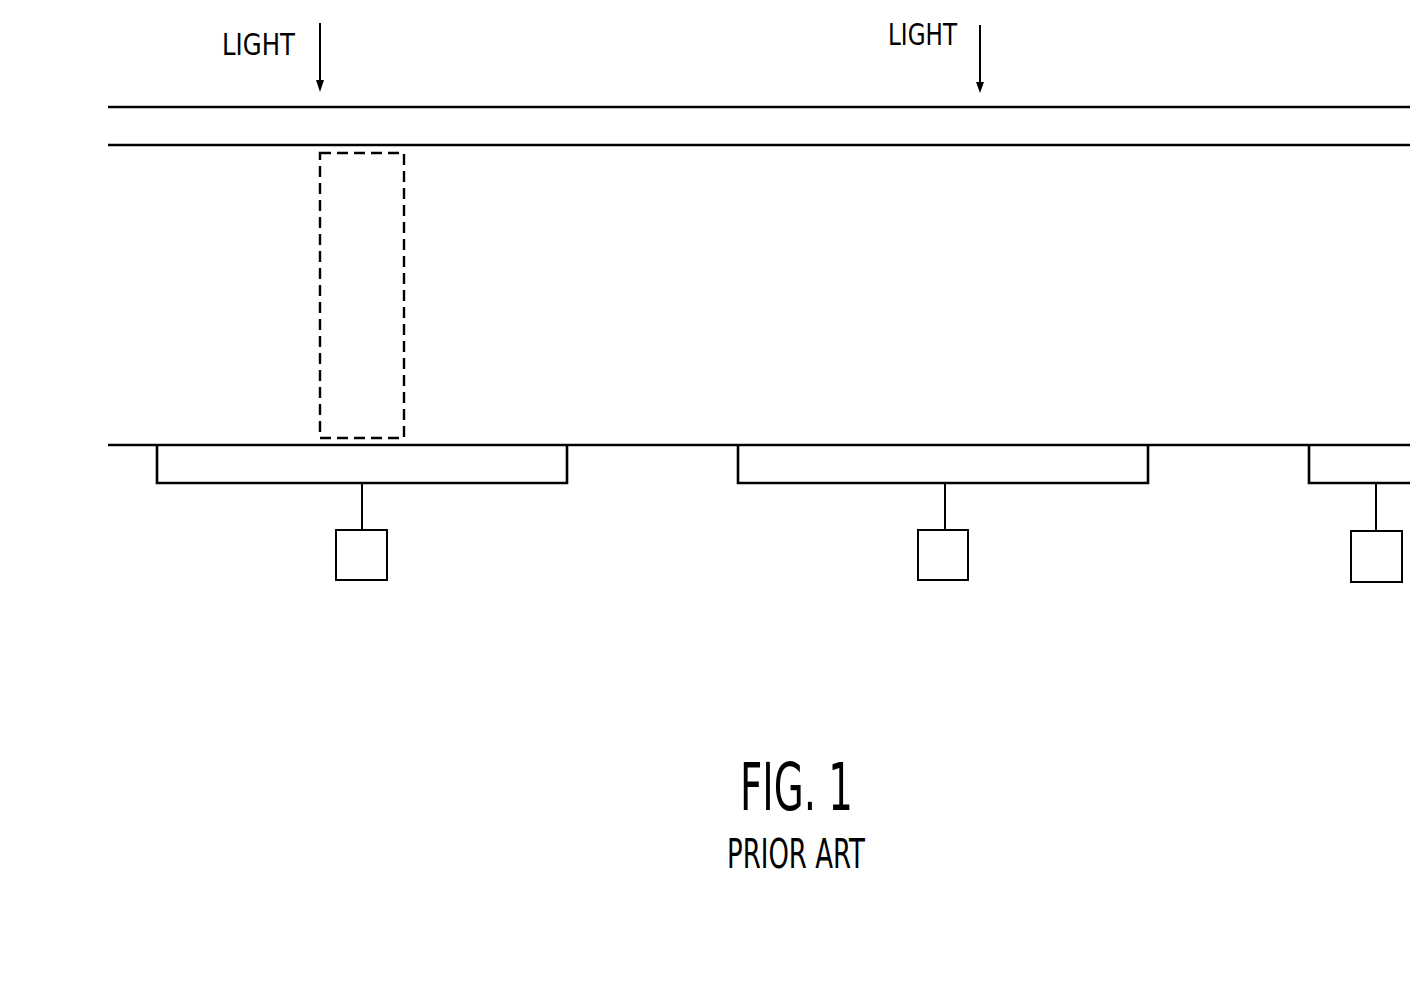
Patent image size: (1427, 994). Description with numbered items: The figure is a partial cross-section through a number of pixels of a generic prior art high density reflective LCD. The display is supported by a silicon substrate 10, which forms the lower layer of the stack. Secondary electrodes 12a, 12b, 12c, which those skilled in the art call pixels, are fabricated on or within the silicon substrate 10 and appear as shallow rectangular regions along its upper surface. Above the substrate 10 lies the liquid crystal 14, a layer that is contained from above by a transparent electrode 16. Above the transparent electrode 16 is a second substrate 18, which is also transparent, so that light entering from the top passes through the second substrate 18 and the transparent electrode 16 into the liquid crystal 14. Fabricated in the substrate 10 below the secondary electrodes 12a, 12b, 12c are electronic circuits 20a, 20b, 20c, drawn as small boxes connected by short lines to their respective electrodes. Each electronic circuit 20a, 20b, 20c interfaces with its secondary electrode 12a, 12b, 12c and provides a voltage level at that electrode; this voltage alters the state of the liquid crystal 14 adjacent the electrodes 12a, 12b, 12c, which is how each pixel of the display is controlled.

The silicon substrate 10 is at (717, 631).
The secondary electrode 12a is at (521, 477).
The secondary electrode 12b is at (806, 477).
The secondary electrode 12c is at (1357, 477).
The liquid crystal 14 is at (549, 296).
The transparent electrode 16 is at (486, 141).
The second substrate 18 is at (486, 82).
The electronic circuit 20a is at (362, 581).
The electronic circuit 20b is at (945, 581).
The electronic circuit 20c is at (1370, 583).